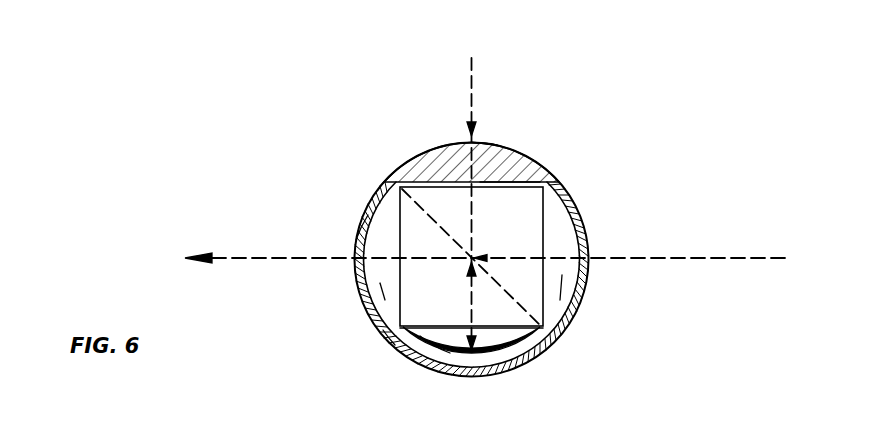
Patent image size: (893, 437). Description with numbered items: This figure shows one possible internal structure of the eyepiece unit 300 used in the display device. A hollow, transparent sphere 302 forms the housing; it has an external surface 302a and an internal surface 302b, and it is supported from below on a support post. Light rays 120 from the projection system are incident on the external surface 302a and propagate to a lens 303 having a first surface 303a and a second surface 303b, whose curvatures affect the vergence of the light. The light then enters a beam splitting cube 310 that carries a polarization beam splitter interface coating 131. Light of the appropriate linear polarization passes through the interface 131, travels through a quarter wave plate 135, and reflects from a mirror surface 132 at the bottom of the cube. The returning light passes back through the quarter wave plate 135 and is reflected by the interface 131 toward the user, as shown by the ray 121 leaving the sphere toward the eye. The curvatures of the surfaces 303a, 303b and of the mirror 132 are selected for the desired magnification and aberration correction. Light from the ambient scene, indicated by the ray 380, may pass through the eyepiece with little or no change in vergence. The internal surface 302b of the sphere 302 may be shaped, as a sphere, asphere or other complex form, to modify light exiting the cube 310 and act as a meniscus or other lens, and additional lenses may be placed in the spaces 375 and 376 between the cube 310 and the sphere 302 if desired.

The unit 300 is at (183, 138).
The hollow transparent sphere 302 is at (368, 215).
The external surface 302a is at (378, 190).
The internal surface 302b is at (356, 240).
The lens 303 is at (520, 152).
The first surface 303a is at (497, 142).
The second surface 303b is at (505, 187).
The beam splitting cube 310 is at (520, 280).
The space 375 is at (562, 275).
The space 376 is at (380, 283).
The polarization beam splitter interface coating 131 is at (513, 300).
The mirror surface 132 is at (450, 354).
The quarter wave plate 135 is at (383, 330).
The light rays 120 is at (473, 72).
The ray 121 is at (240, 257).
The ray 380 is at (703, 257).